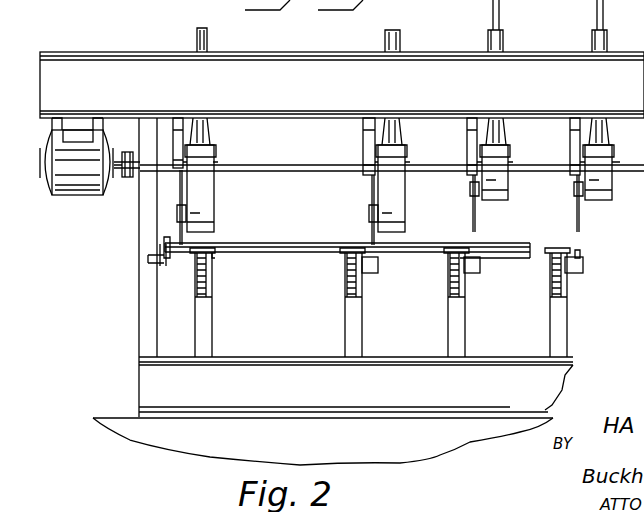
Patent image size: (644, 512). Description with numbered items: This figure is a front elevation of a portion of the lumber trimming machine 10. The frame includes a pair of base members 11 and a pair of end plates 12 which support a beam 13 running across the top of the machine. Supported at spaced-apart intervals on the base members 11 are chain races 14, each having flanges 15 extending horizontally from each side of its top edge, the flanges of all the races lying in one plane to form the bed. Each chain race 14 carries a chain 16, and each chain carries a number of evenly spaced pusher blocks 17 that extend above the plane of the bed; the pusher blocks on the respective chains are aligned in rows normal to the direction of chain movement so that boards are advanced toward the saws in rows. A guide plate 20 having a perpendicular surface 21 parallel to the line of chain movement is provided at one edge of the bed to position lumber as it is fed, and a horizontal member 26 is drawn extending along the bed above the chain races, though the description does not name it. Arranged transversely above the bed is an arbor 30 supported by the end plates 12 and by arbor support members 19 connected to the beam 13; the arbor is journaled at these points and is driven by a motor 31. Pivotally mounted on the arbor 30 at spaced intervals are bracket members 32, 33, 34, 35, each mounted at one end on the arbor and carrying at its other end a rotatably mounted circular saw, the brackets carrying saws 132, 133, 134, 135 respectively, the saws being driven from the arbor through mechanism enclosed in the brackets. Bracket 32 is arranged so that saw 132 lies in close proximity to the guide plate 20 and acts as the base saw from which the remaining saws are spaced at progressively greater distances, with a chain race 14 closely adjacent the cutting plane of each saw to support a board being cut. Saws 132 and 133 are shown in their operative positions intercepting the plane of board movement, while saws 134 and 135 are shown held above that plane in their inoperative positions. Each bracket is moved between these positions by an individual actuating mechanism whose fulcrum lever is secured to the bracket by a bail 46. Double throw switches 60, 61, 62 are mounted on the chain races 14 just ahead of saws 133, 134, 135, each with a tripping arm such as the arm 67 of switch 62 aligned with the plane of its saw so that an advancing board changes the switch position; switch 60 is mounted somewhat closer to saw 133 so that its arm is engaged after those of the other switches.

The lumber trimming machine 10 is at (146, 327).
The base members 11 is at (153, 383).
The end plates 12 is at (146, 300).
The beam 13 is at (342, 59).
The chain races 14 is at (212, 320).
The flanges 15 is at (218, 258).
The chains 16 is at (196, 290).
The pusher blocks 17 is at (192, 255).
The arbor support members 19 is at (173, 152).
The guide plate 20 is at (158, 260).
The perpendicular surface 21 is at (169, 240).
The rail 26 is at (312, 244).
The arbor 30 is at (302, 163).
The motor 31 is at (70, 197).
The bracket member 32 is at (232, 216).
The bracket member 33 is at (422, 216).
The bracket member 34 is at (506, 195).
The bracket member 35 is at (610, 195).
The bail 46 is at (212, 130).
The double throw switch 60 is at (372, 274).
The double throw switch 61 is at (476, 274).
The double throw switch 62 is at (580, 272).
The tripping arm 67 is at (580, 253).
The circular saw 132 is at (182, 200).
The circular saw 133 is at (372, 200).
The circular saw 134 is at (472, 200).
The circular saw 135 is at (577, 214).